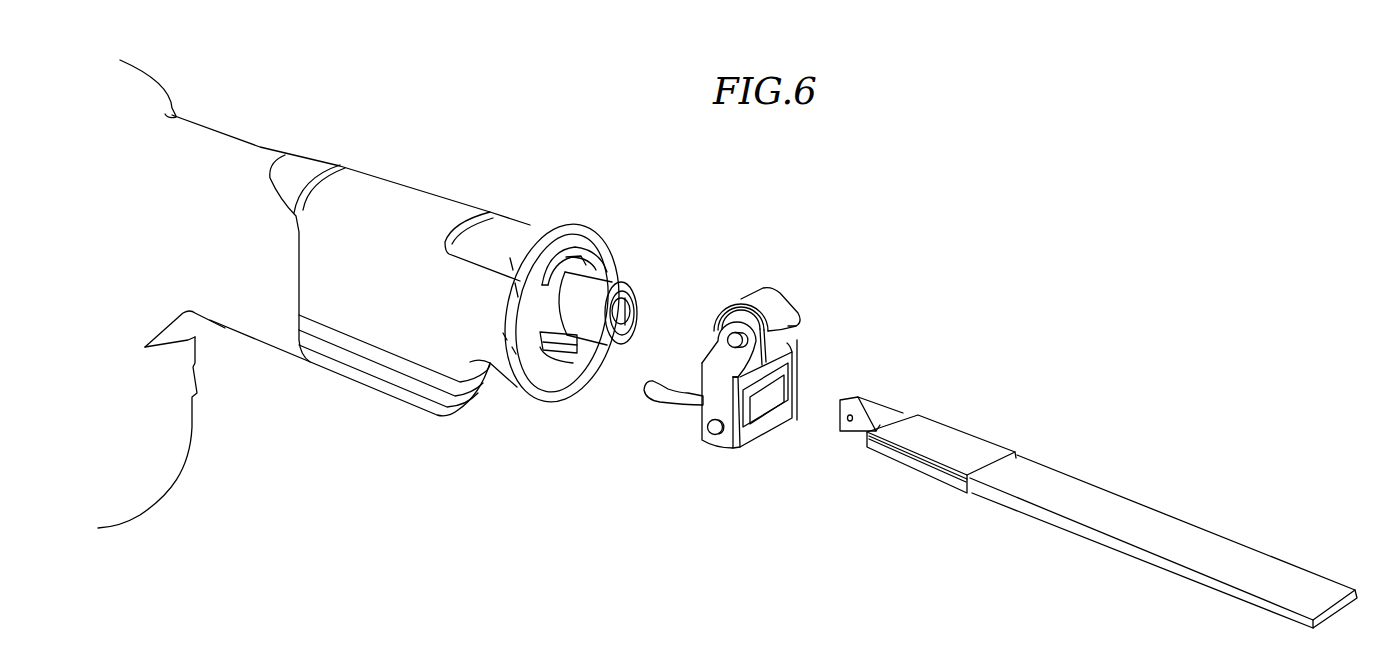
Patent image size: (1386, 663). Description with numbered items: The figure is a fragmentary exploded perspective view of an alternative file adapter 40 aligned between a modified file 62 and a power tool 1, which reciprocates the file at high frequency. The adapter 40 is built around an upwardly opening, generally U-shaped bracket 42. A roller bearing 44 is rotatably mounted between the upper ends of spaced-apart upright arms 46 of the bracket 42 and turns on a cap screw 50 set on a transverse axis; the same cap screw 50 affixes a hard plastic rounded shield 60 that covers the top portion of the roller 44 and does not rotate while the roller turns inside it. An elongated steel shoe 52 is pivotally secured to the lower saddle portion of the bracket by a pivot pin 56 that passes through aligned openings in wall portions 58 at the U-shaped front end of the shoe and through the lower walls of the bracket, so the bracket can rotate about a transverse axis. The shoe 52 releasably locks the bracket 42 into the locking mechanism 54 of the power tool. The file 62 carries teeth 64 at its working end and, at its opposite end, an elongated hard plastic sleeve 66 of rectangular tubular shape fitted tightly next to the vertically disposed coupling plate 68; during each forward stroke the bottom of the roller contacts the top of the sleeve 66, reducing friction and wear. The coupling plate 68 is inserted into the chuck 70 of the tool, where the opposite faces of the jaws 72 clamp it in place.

The power tool 1 is at (388, 197).
The file adapter 40 is at (673, 442).
The U-shaped bracket 42 is at (795, 291).
The roller bearing 44 is at (822, 336).
The upright arm 46 is at (717, 387).
The cap screw 50 is at (720, 340).
The elongated shoe 52 is at (665, 407).
The locking mechanism 54 is at (570, 378).
The pivot pin 56 is at (712, 435).
The wall portions 58 is at (787, 427).
The rounded shield 60 is at (777, 313).
The file 62 is at (1098, 501).
The teeth 64 is at (1260, 567).
The hard plastic sleeve 66 is at (963, 443).
The coupling plate 68 is at (860, 417).
The chuck 70 is at (605, 278).
The jaws 72 is at (635, 310).